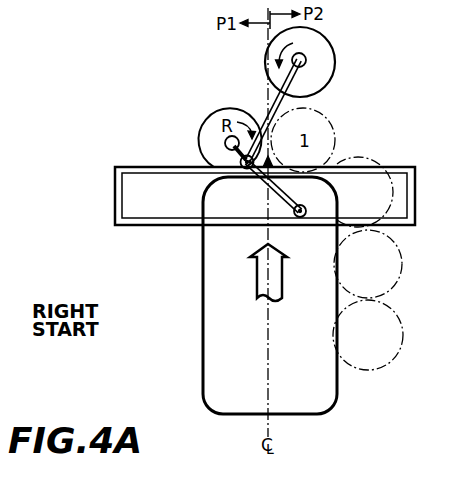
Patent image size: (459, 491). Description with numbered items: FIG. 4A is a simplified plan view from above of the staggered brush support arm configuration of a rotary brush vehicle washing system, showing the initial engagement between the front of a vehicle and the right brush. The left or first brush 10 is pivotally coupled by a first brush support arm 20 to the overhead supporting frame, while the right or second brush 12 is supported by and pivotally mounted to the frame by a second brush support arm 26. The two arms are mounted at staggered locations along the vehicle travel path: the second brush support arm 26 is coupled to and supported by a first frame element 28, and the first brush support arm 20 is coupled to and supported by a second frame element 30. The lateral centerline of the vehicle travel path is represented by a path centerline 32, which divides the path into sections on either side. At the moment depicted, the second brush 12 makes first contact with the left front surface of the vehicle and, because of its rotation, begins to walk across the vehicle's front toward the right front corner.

The first brush 10 is at (336, 67).
The first brush support arm 20 is at (289, 108).
The second brush support arm 26 is at (286, 191).
The first frame element 28 is at (151, 226).
The second frame element 30 is at (174, 149).
The path centerline 32 is at (300, 378).
The second brush 12 is at (400, 333).